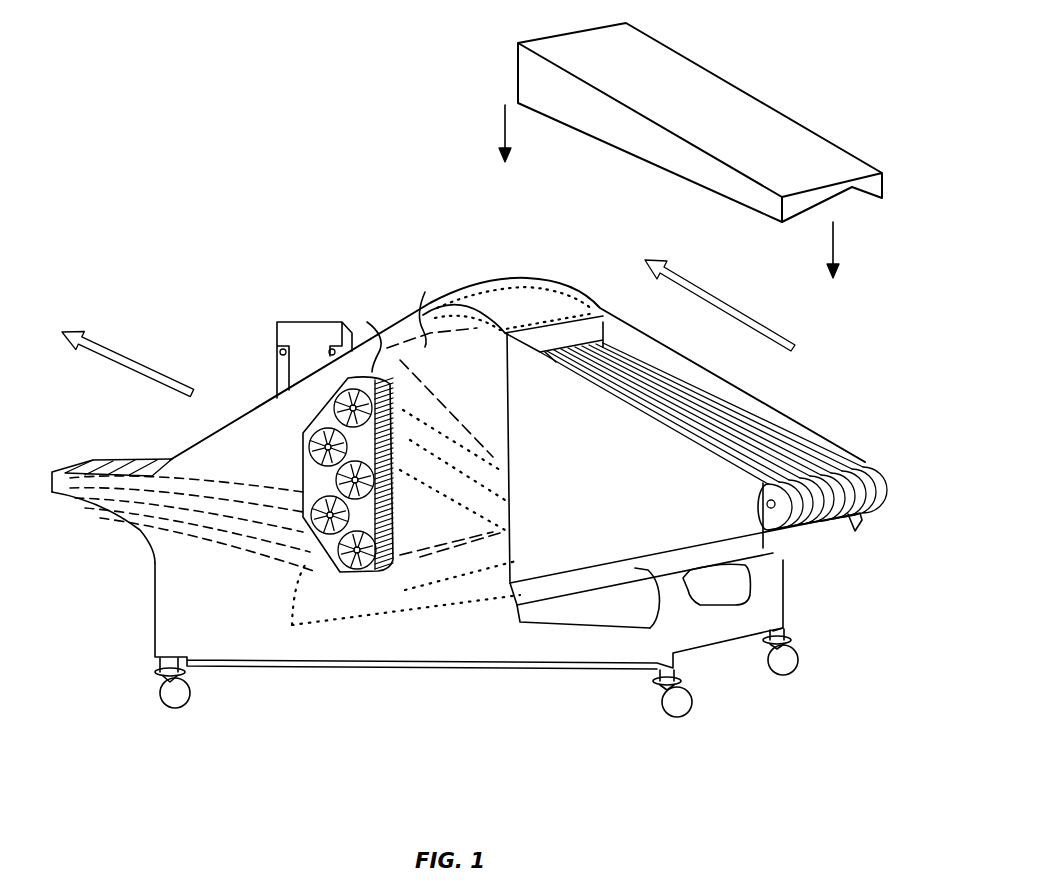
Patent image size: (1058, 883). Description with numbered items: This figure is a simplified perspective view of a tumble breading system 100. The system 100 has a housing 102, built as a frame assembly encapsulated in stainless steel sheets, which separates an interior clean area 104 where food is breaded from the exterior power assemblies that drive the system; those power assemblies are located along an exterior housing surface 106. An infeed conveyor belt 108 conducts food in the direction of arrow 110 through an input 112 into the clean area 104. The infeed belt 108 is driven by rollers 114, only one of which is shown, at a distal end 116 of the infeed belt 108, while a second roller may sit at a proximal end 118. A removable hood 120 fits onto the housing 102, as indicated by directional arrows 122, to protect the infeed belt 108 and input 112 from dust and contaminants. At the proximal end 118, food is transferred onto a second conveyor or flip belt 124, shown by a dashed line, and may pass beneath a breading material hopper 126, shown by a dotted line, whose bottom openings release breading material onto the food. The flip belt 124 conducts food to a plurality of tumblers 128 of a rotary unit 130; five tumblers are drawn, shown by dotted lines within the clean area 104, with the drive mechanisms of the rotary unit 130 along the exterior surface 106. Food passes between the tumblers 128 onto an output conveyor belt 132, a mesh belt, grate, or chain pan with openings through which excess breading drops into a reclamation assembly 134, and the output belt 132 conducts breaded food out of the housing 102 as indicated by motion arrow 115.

The tumble breading system 100 is at (188, 249).
The housing 102 is at (150, 558).
The clean area 104 is at (428, 330).
The exterior housing surface 106 is at (210, 640).
The infeed conveyor belt 108 is at (762, 417).
The arrow 110 is at (740, 312).
The input 112 is at (602, 330).
The roller 114 is at (782, 520).
The distal end 116 is at (840, 455).
The proximal end 118 is at (548, 355).
The removable hood 120 is at (713, 70).
The directional arrows 122 is at (845, 232).
The second conveyor (flip belt) 124 is at (422, 343).
The breading material hopper 126 is at (495, 293).
The tumblers 128 is at (378, 335).
The rotary unit 130 is at (300, 460).
The output conveyor belt 132 is at (120, 457).
The reclamation assembly 134 is at (432, 602).
The motion arrow 115 is at (140, 365).